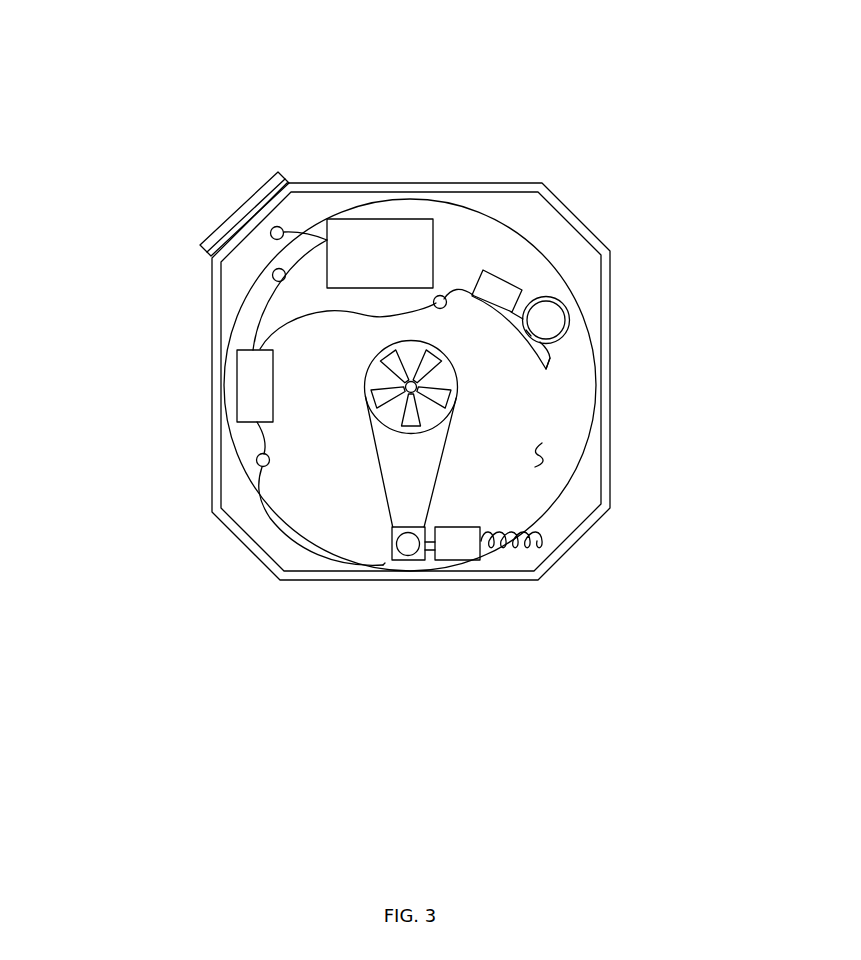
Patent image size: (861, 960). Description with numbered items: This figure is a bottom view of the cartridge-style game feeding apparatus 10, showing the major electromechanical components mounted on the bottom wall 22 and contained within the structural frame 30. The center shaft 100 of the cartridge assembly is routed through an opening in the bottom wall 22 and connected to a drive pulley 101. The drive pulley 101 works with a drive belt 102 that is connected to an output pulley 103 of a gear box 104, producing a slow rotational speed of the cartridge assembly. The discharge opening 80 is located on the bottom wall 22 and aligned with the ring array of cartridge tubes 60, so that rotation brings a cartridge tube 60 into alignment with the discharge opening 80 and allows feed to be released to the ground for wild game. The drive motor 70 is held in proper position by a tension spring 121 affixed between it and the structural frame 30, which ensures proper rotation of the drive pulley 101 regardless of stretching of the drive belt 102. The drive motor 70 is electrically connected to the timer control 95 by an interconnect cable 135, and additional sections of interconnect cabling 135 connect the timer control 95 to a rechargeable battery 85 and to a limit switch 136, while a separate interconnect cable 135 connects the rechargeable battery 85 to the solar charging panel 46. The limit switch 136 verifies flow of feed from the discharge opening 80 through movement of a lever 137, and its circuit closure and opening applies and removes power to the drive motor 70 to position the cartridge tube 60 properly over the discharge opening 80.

The cartridge-style game feeding apparatus 10 is at (178, 722).
The bottom wall 22 is at (545, 452).
The structural frame 30 is at (612, 375).
The solar charging panel 46 is at (250, 198).
The cartridge tube 60 is at (562, 302).
The drive motor 70 is at (465, 553).
The discharge opening 80 is at (548, 318).
The rechargeable battery 85 is at (380, 219).
The timer control 95 is at (243, 385).
The center shaft 100 is at (410, 385).
The drive pulley 101 is at (443, 372).
The drive belt 102 is at (380, 458).
The output pulley 103 is at (383, 562).
The gear box 104 is at (400, 552).
The tension spring 121 is at (535, 542).
The interconnect cable 135 is at (280, 228).
The limit switch 136 is at (483, 292).
The lever 137 is at (547, 357).